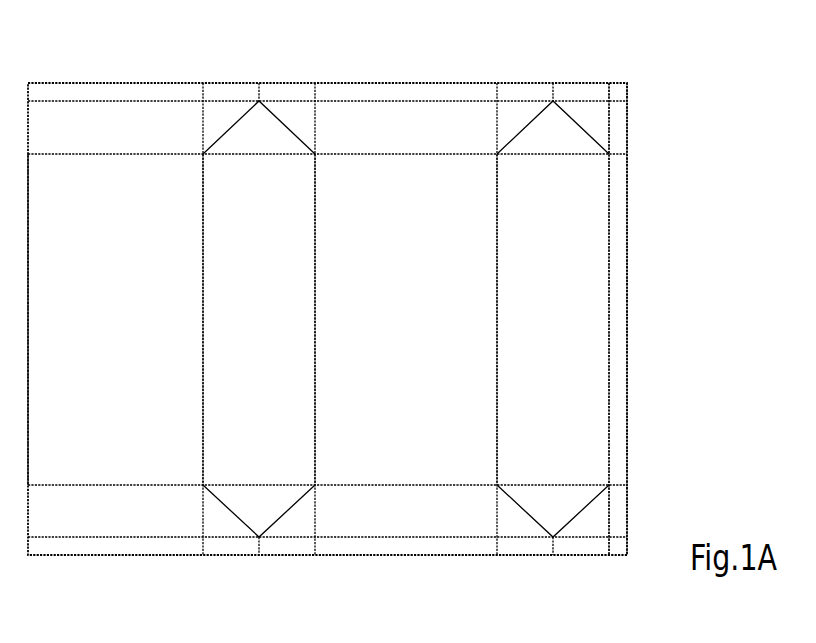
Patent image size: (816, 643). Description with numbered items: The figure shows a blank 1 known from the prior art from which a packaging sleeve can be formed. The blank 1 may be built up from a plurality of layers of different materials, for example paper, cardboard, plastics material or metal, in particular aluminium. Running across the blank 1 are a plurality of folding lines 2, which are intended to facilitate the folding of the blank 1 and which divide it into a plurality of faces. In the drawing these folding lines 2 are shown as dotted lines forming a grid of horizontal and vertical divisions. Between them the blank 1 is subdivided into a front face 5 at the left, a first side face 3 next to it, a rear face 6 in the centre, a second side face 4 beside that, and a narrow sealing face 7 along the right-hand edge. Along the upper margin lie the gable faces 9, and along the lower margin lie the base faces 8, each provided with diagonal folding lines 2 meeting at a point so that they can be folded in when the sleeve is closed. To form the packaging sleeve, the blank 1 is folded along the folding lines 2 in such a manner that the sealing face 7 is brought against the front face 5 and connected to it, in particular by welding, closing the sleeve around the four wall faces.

The blank 1 is at (690, 106).
The folding lines 2 is at (49, 153).
The first side face 3 is at (250, 332).
The second side face 4 is at (544, 332).
The front face 5 is at (107, 332).
The rear face 6 is at (398, 332).
The sealing face 7 is at (618, 309).
The base faces 8 is at (168, 523).
The gable faces 9 is at (233, 115).